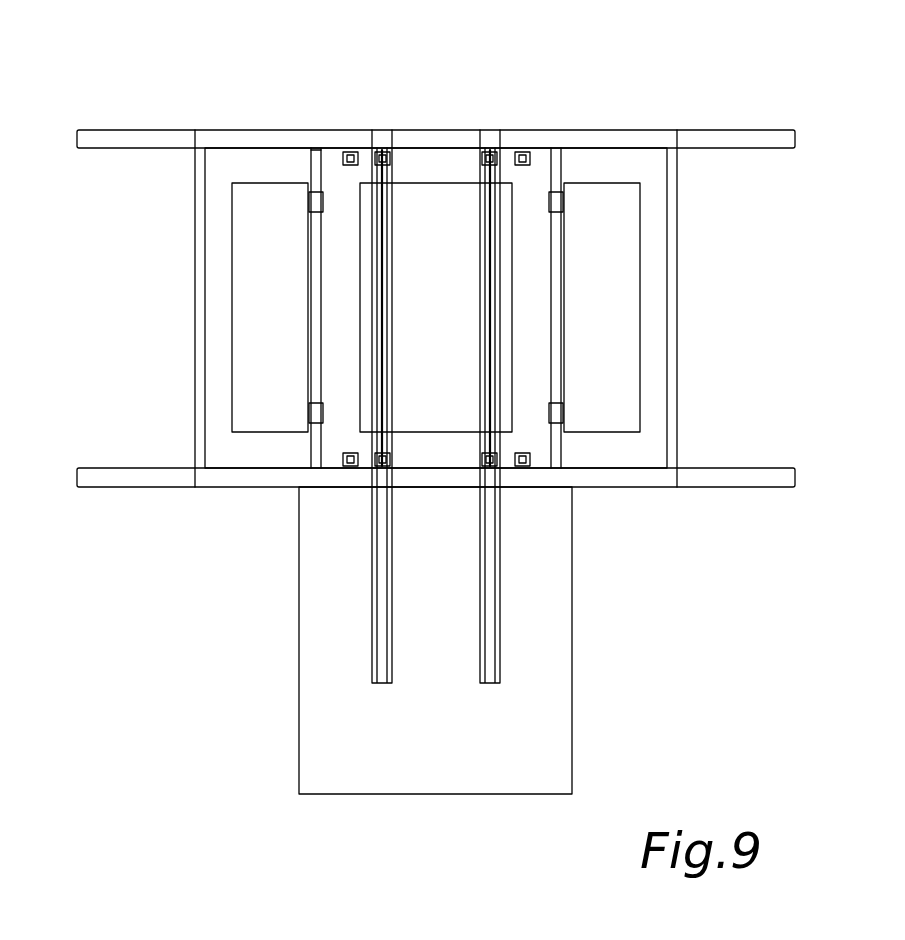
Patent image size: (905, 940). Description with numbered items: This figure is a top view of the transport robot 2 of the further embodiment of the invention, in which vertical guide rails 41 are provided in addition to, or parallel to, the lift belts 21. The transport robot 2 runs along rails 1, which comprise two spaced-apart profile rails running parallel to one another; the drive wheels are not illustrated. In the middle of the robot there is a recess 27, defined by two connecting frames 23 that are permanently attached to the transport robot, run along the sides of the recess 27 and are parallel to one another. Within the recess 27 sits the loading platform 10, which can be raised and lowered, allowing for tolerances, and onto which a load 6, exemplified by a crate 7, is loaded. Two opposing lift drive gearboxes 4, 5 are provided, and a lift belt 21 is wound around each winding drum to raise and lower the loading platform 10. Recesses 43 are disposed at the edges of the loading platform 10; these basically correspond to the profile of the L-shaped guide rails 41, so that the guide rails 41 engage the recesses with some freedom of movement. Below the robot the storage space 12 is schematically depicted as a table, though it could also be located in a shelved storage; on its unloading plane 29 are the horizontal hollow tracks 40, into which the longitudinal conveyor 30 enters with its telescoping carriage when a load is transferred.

The rails 1 is at (703, 138).
The transport robot 2 is at (230, 170).
The lift drive gearbox 4 is at (597, 207).
The lift drive gearbox 5 is at (255, 202).
The load 6 is at (492, 74).
The crate 7 is at (455, 140).
The loading platform 10 is at (530, 317).
The storage space 12 is at (494, 640).
The lift belt 21 is at (313, 200).
The connecting frame 23 is at (427, 208).
The recess 27 is at (318, 163).
The unloading plane 29 is at (555, 640).
The longitudinal conveyor 30 is at (492, 323).
The horizontal hollow tracks 40 is at (382, 598).
The vertical guide rails 41 is at (449, 289).
The recesses 43 is at (353, 155).